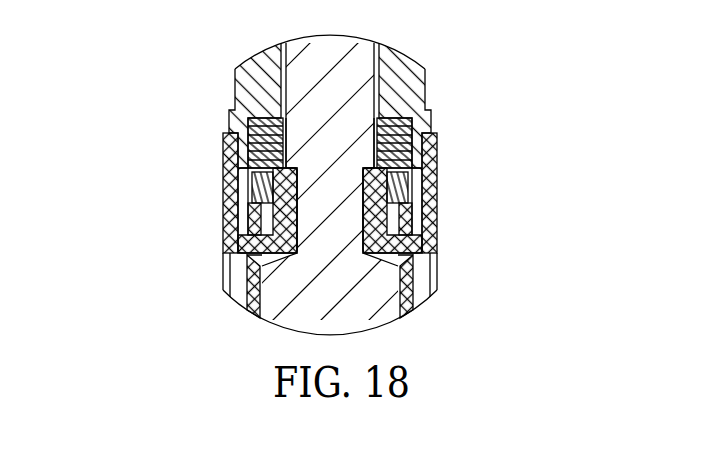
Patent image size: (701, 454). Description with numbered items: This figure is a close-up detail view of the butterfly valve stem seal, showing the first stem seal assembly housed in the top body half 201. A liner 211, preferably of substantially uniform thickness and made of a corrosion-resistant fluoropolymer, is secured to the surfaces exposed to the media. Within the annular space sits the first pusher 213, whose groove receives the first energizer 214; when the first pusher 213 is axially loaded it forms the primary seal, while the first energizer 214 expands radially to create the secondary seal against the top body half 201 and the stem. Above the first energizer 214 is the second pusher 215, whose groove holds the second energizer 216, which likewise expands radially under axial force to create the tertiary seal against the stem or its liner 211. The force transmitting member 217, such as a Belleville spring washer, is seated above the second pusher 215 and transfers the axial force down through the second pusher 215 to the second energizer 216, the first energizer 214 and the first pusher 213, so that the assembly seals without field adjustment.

The top body half 201 is at (257, 95).
The liner 211 is at (232, 212).
The first pusher 213 is at (250, 236).
The first energizer 214 is at (414, 219).
The second pusher 215 is at (393, 188).
The second energizer 216 is at (248, 182).
The force transmitting member 217 is at (405, 128).